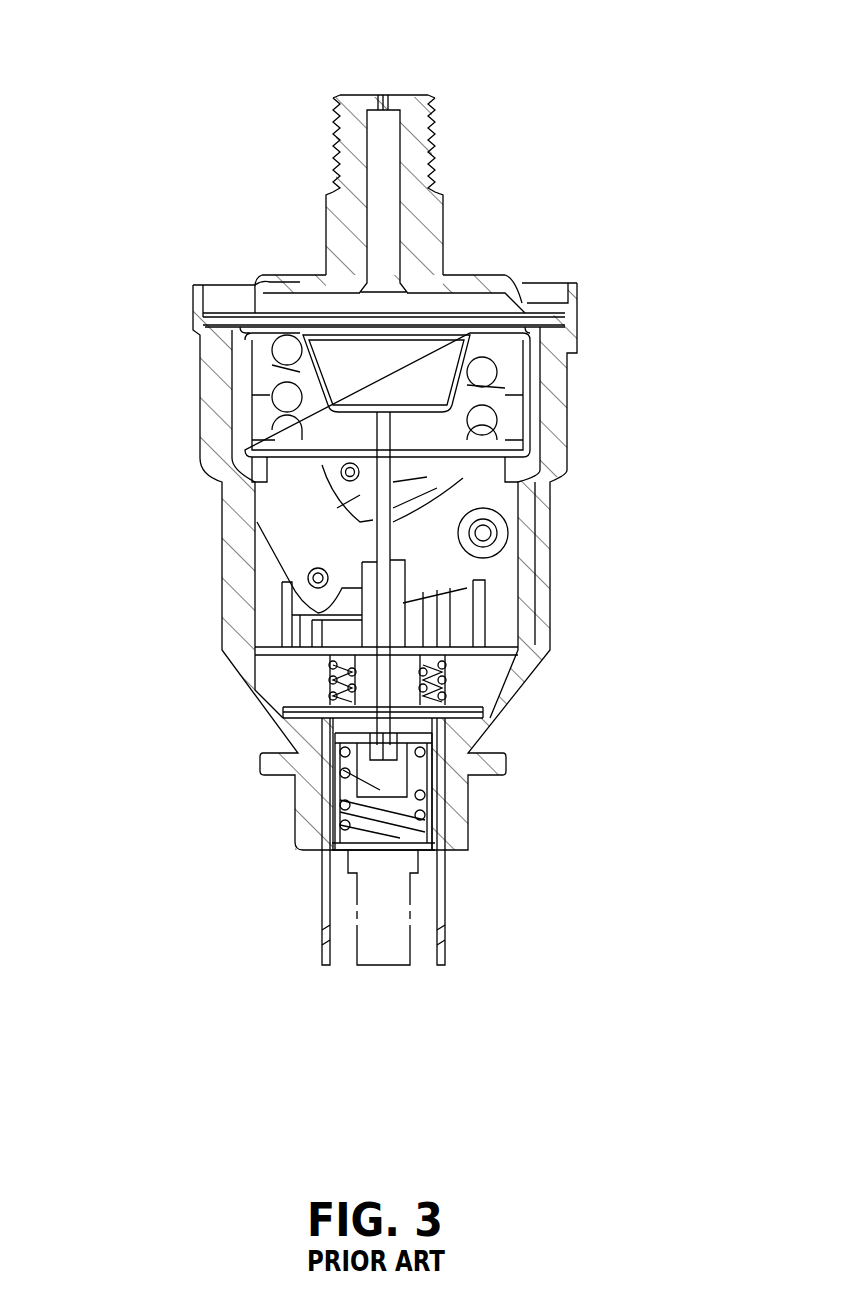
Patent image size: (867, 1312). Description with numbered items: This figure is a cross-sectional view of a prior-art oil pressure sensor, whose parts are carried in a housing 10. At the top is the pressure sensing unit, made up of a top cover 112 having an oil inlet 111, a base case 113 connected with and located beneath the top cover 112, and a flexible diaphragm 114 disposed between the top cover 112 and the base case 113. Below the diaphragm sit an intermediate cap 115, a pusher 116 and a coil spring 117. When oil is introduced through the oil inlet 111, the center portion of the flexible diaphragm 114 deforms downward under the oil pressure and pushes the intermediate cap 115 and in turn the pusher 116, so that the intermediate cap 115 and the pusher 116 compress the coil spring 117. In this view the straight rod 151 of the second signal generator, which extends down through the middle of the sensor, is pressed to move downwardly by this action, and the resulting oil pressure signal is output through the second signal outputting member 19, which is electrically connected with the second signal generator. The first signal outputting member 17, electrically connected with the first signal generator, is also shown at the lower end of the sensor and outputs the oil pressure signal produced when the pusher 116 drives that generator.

The housing 10 is at (550, 445).
The oil inlet 111 is at (383, 93).
The top cover 112 is at (485, 282).
The base case 113 is at (530, 397).
The flexible diaphragm 114 is at (532, 300).
The intermediate cap 115 is at (258, 282).
The pusher 116 is at (283, 372).
The coil spring 117 is at (282, 402).
The straight rod 151 is at (387, 535).
The second signal outputting member 19 is at (445, 902).
The first signal outputting member 17 is at (383, 953).